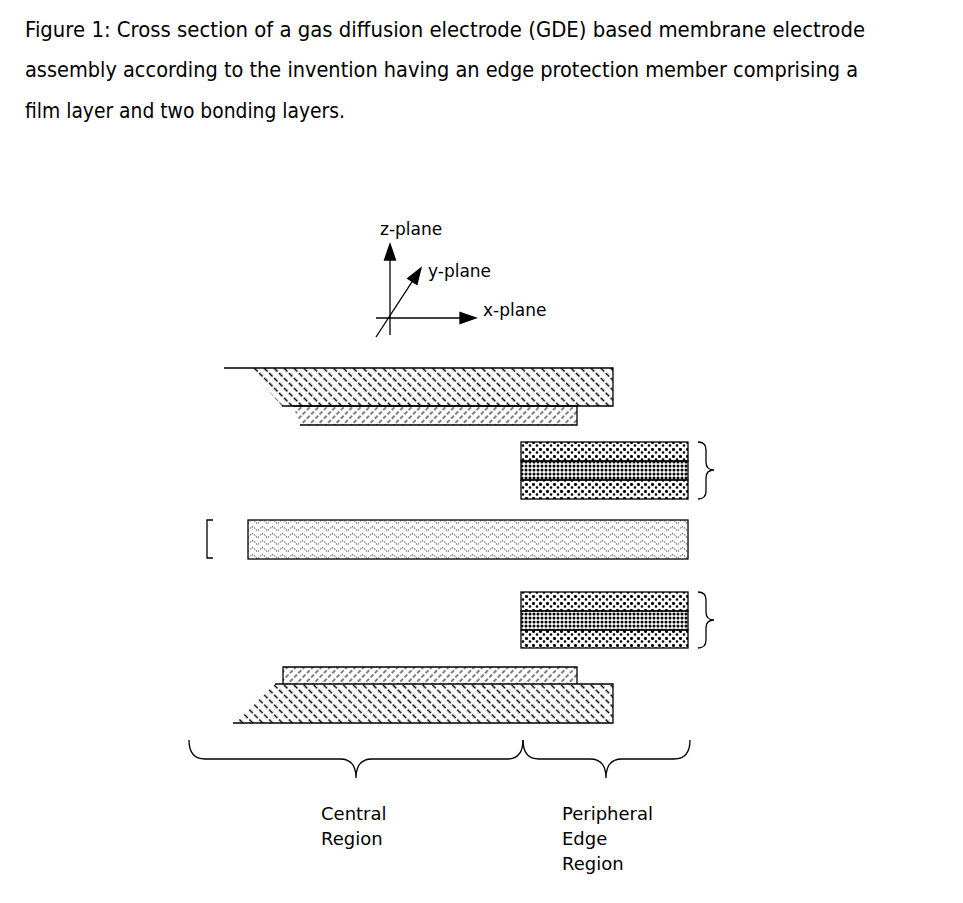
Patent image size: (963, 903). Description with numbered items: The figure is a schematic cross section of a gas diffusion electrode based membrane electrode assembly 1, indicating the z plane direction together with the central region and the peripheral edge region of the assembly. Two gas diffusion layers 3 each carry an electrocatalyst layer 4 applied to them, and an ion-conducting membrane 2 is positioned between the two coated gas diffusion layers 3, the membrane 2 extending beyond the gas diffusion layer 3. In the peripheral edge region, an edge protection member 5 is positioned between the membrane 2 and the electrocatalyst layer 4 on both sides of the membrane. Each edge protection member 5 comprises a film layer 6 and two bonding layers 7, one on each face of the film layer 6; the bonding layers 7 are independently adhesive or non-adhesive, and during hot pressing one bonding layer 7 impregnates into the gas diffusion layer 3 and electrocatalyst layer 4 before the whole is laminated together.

The GDE based membrane electrode assembly 1 is at (218, 297).
The ion-conducting membrane 2 is at (269, 547).
The gas diffusion layer 3 is at (267, 388).
The electrocatalyst layer 4 is at (289, 416).
The edge protection member 5 is at (647, 535).
The film layer 6 is at (667, 461).
The bonding layer 7 is at (563, 448).